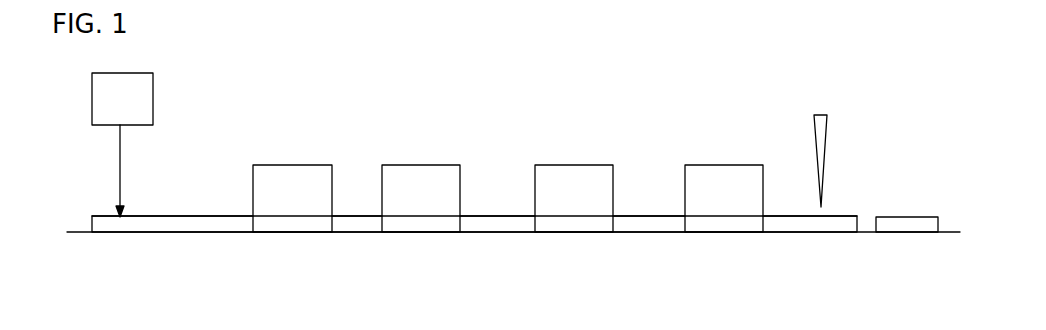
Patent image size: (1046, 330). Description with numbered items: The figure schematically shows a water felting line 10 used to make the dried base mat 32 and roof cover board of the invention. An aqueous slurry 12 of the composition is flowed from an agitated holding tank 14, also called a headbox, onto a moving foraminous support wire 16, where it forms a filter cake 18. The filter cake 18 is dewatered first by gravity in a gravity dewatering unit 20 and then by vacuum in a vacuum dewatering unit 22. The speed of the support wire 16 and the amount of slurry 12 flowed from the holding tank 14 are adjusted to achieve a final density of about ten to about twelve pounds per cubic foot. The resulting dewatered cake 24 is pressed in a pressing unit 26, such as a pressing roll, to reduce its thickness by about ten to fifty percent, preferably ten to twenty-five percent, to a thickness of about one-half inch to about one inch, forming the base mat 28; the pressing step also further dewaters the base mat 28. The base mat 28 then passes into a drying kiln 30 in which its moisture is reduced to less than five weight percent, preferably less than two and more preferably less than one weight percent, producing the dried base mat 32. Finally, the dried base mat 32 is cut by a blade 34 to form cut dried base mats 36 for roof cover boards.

The water felting line 10 is at (350, 118).
The aqueous slurry 12 is at (120, 152).
The agitated holding tank 14 is at (109, 108).
The moving foraminous support wire 16 is at (158, 232).
The filter cake 18 is at (232, 215).
The gravity dewatering unit 20 is at (277, 202).
The vacuum dewatering unit 22 is at (408, 202).
The dewatered cake 24 is at (517, 216).
The pressing unit 26 is at (561, 202).
The base mat 28 is at (662, 215).
The drying kiln 30 is at (711, 202).
The dried base mat 32 is at (803, 217).
The blade 34 is at (828, 123).
The cut dried base mats 36 is at (910, 215).